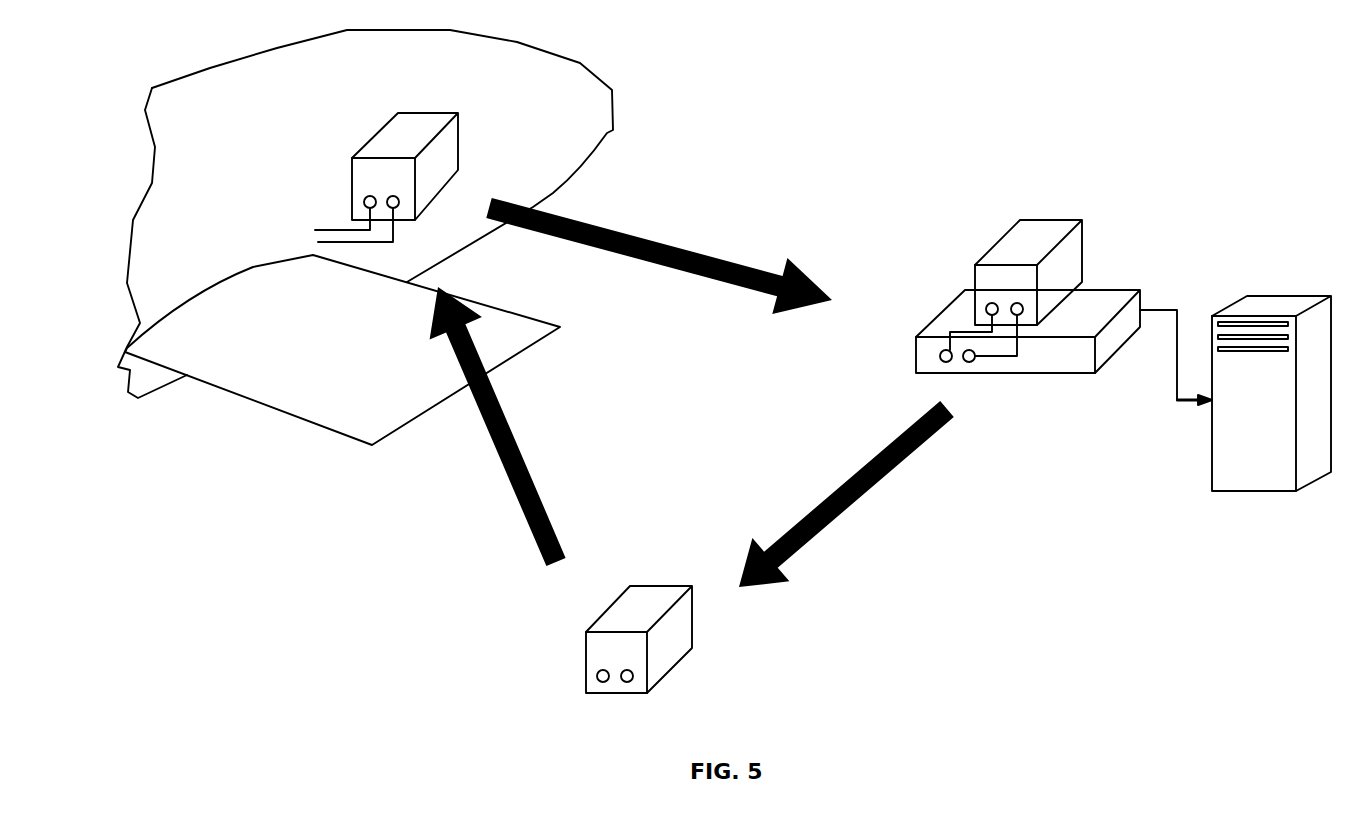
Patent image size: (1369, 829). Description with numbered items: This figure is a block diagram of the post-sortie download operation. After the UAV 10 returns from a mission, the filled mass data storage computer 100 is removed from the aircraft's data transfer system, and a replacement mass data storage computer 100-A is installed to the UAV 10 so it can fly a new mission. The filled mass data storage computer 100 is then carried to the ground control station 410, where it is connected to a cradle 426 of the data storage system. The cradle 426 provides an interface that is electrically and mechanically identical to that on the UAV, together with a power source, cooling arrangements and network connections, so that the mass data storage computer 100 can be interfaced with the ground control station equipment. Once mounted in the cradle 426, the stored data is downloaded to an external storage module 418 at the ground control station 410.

The UAV 10 is at (607, 133).
The mass data storage computer 100 is at (368, 172).
The replacement mass data storage computer 100-A is at (615, 612).
The ground control station 410 is at (1137, 348).
The cradle 426 is at (1063, 360).
The external storage module 418 is at (1247, 481).